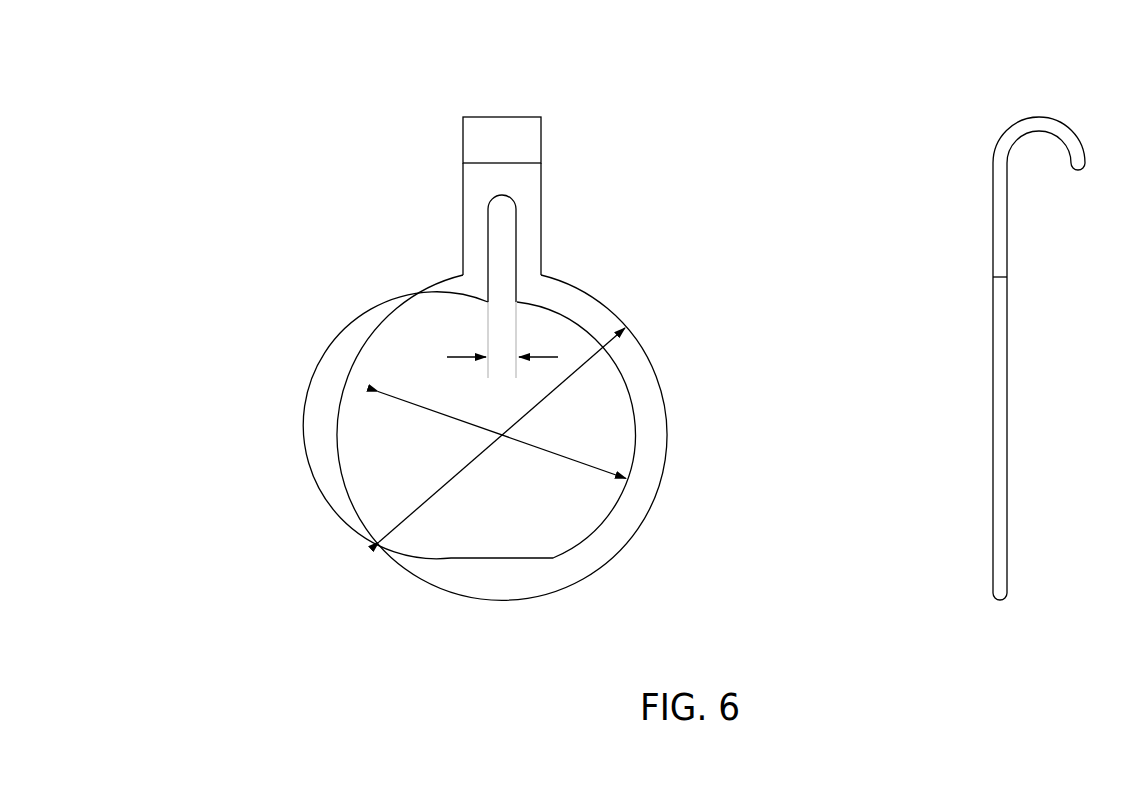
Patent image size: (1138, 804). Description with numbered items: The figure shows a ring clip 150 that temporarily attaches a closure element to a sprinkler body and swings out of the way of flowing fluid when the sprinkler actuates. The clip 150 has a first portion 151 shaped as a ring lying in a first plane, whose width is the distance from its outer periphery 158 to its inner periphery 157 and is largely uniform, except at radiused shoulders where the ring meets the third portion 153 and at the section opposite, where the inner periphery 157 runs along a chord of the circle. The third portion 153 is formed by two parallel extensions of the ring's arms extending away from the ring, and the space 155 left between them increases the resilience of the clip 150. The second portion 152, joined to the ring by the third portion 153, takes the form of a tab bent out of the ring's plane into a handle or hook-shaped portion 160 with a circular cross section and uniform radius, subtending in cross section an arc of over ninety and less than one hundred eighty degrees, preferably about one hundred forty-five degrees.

The clip 150 is at (388, 88).
The first portion 151 is at (662, 477).
The second portion 152 is at (542, 131).
The third portion 153 is at (542, 221).
The space 155 is at (457, 357).
The inner periphery 157 is at (593, 466).
The outer periphery 158 is at (427, 502).
The hook-shaped portion 160 is at (1053, 125).